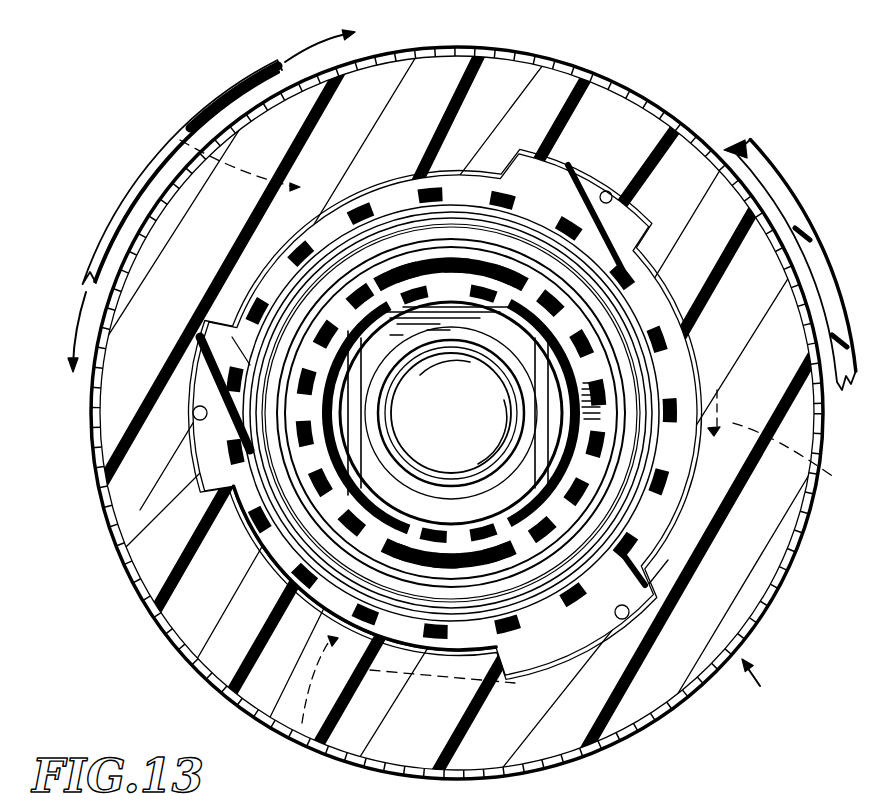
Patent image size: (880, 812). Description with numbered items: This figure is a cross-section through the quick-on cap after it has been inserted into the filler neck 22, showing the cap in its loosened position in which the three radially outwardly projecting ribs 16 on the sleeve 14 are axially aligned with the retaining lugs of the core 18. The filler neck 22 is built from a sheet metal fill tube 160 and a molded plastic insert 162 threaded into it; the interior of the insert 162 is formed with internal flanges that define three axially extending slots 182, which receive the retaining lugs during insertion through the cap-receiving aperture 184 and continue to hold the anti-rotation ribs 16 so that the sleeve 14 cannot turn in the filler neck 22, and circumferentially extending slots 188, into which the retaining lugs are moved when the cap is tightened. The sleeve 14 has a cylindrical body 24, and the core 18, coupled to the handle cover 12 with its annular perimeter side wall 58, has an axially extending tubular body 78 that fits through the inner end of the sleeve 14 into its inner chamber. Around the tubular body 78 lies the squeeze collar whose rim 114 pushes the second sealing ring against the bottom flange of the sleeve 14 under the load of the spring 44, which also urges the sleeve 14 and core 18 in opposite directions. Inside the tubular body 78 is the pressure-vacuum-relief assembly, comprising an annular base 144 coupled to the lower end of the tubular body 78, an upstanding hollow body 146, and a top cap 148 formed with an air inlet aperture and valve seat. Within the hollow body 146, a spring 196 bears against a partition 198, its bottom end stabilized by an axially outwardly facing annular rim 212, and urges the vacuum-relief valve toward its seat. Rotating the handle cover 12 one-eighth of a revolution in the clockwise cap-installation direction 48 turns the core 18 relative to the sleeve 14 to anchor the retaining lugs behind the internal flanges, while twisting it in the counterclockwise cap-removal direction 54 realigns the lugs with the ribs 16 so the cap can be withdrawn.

The handle cover 12 is at (775, 160).
The sleeve 14 is at (655, 569).
The ribs 16 is at (566, 165).
The core 18 is at (640, 395).
The filler neck 22 is at (763, 680).
The cylindrical body 24 is at (443, 178).
The spring 44 is at (395, 222).
The cap-installation direction 48 is at (297, 52).
The cap-removal direction 54 is at (72, 325).
The annular perimeter side wall 58 is at (213, 102).
The tubular body 78 is at (520, 177).
The rim 114 is at (200, 666).
The annular base 144 is at (580, 350).
The hollow body 146 is at (367, 365).
The top cap 148 is at (433, 547).
The fill tube 160 is at (603, 753).
The insert 162 is at (633, 713).
The axially extending slot 182 is at (625, 150).
The cap-receiving aperture 184 is at (273, 539).
The circumferentially extending slots 188 is at (172, 135).
The spring 196 is at (405, 457).
The partition 198 is at (503, 411).
The annular rim 212 is at (499, 447).